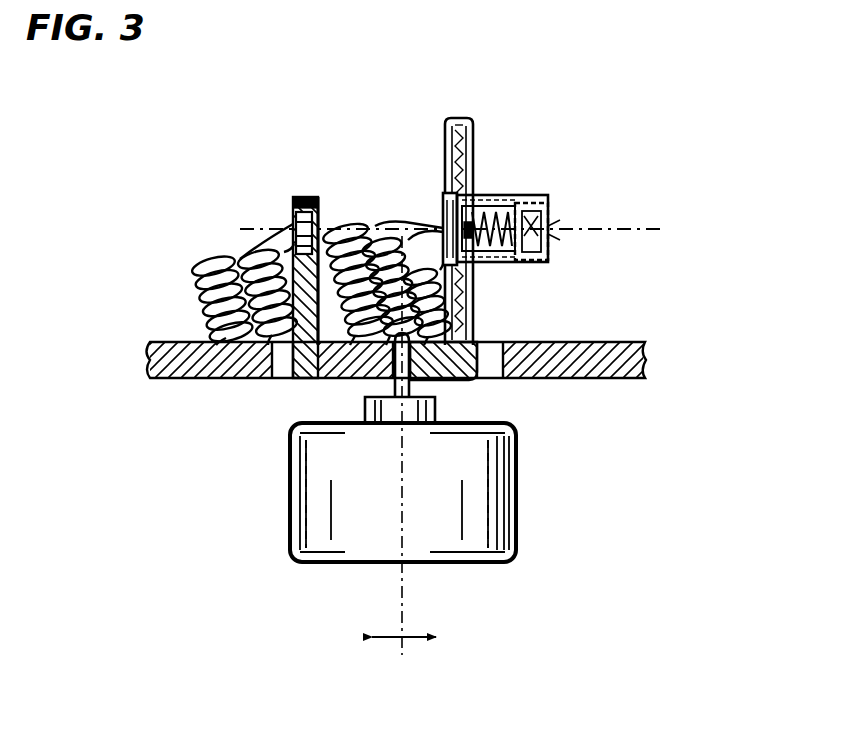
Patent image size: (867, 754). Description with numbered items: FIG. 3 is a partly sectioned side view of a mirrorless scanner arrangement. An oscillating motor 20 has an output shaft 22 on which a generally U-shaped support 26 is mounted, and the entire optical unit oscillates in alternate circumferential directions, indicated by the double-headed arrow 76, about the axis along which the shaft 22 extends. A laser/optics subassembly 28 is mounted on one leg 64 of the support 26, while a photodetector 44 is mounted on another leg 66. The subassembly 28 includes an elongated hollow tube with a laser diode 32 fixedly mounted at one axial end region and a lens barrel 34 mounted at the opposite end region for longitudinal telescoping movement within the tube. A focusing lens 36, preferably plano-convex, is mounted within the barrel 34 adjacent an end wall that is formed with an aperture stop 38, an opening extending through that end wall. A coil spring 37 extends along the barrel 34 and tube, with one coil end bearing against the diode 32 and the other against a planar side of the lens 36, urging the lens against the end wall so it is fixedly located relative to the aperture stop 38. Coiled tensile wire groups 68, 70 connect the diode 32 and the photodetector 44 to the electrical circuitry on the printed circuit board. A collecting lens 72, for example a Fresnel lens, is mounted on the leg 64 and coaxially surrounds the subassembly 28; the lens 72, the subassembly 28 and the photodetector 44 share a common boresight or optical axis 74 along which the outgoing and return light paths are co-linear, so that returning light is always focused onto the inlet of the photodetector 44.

The oscillating motor 20 is at (516, 528).
The output shaft 22 is at (410, 387).
The U-shaped support 26 is at (297, 381).
The laser/optics subassembly 28 is at (548, 152).
The laser diode 32 is at (486, 270).
The lens barrel 34 is at (530, 264).
The focusing lens 36 is at (549, 211).
The coil spring 37 is at (498, 204).
The aperture stop 38 is at (552, 242).
The photodetector 44 is at (295, 200).
The leg of the support 64 is at (458, 118).
The leg of the support 66 is at (318, 198).
The coiled tensile wire group 68 is at (378, 222).
The coiled tensile wire group 70 is at (194, 283).
The collecting lens 72 is at (476, 149).
The optical axis 74 is at (632, 229).
The double-headed arrow 76 is at (402, 641).